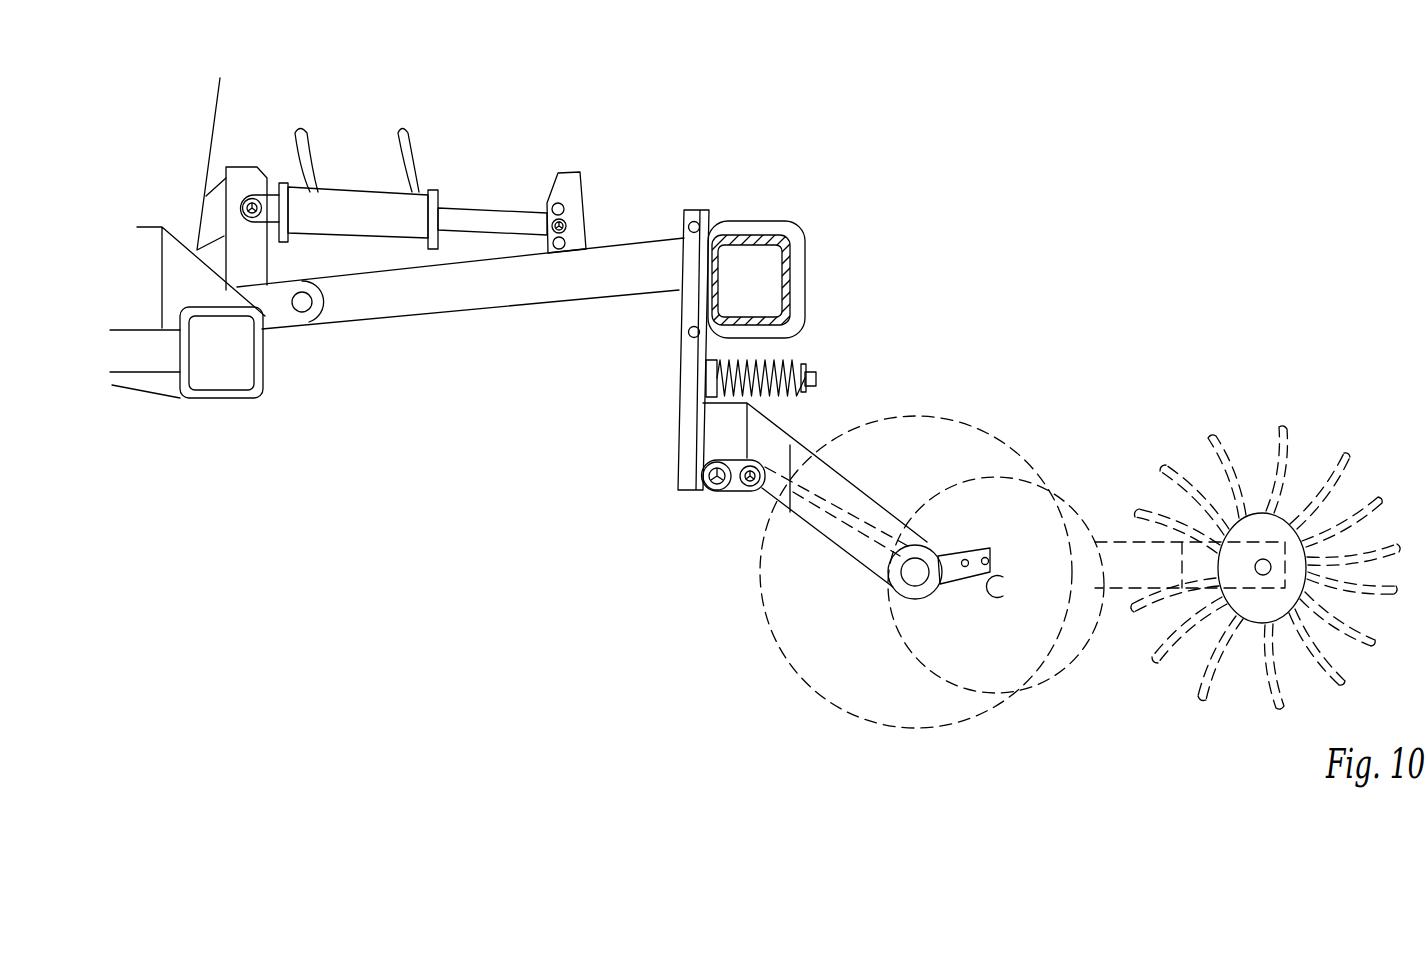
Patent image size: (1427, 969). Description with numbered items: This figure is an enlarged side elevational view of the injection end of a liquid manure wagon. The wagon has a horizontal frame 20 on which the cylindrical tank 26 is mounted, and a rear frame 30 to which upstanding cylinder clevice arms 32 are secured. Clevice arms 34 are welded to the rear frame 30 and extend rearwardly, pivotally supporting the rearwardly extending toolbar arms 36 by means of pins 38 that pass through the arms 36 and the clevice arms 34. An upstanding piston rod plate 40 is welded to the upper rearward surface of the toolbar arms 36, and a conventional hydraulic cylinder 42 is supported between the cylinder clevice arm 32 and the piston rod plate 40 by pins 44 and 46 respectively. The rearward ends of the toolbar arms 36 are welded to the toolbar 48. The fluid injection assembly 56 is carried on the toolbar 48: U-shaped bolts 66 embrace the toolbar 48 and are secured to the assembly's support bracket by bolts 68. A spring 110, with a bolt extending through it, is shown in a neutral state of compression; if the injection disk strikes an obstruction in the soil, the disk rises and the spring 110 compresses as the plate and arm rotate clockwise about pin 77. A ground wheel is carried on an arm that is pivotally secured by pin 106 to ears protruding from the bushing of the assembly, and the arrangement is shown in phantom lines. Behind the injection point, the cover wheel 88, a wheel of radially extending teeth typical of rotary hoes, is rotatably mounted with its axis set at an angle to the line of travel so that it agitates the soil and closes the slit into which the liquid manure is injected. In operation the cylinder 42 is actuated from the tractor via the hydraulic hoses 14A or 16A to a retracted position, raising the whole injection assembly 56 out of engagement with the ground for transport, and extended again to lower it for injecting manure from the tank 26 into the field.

The hydraulic hose 14A is at (300, 132).
The hydraulic hose 16A is at (404, 131).
The horizontal frame 20 is at (140, 365).
The cylindrical tank 26 is at (215, 103).
The rear frame 30 is at (259, 401).
The cylinder clevice arm 32 is at (226, 176).
The clevice arm 34 is at (272, 318).
The toolbar arm 36 is at (558, 297).
The pin 38 is at (302, 300).
The piston rod plate 40 is at (568, 182).
The hydraulic cylinder 42 is at (352, 187).
The pin 44 is at (252, 203).
The pin 46 is at (567, 222).
The toolbar 48 is at (790, 265).
The fluid injection assembly 56 is at (1100, 415).
The U-shaped bolt 66 is at (783, 222).
The bolt 68 is at (694, 222).
The pin 77 is at (716, 485).
The cover wheel 88 is at (1222, 412).
The pin 106 is at (749, 468).
The spring 110 is at (800, 365).